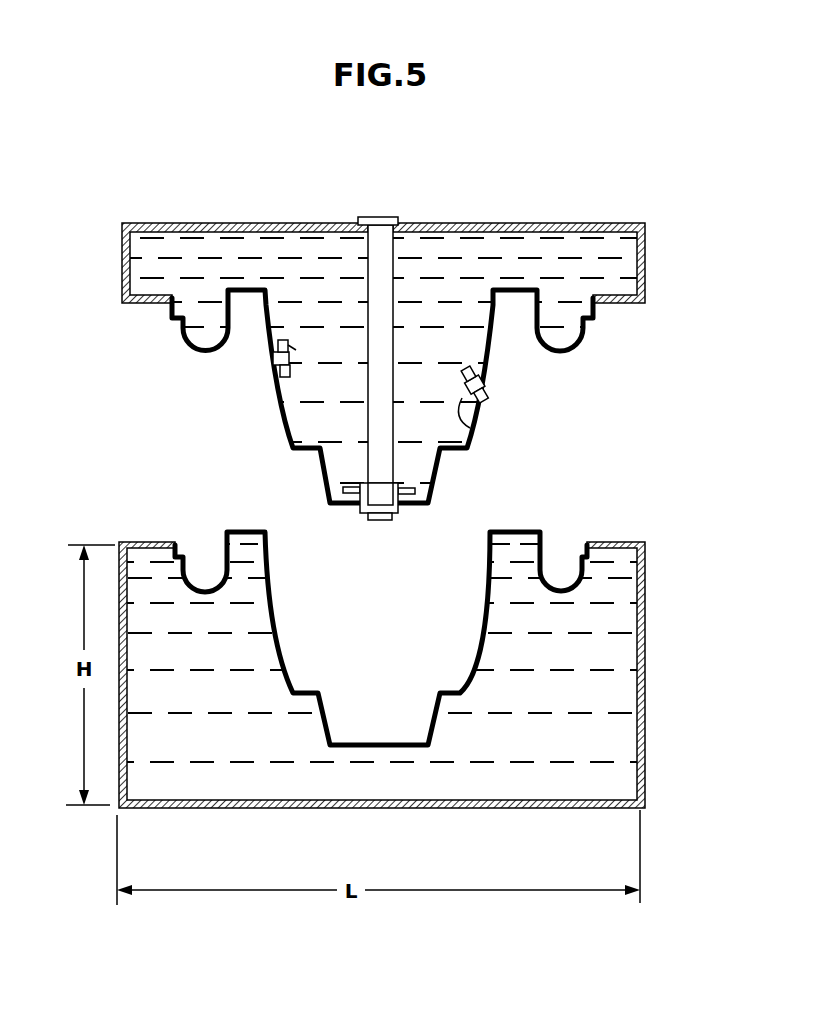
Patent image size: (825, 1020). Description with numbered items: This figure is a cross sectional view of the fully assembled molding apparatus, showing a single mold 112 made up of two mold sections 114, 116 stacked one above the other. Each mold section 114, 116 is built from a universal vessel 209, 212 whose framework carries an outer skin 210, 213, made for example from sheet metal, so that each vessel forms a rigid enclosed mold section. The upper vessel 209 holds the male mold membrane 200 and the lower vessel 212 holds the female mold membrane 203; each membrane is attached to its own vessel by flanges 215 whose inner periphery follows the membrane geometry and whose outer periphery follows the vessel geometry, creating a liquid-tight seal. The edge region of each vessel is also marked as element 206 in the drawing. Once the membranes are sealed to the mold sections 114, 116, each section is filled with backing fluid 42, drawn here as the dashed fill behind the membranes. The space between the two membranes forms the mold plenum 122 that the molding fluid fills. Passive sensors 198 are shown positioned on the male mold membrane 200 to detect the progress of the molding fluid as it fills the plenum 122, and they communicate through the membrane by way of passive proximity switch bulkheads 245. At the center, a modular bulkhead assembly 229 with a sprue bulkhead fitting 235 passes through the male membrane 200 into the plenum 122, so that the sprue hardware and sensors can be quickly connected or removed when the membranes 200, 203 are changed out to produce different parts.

The backing fluid 42 is at (190, 258).
The mold 112 is at (710, 442).
The mold section 114 is at (376, 519).
The mold section 116 is at (426, 646).
The mold plenum 122 is at (283, 510).
The passive sensors 198 is at (271, 369).
The male mold membrane 200 is at (281, 411).
The female mold membrane 203 is at (293, 673).
The flange 206 is at (152, 303).
The universal vessel 209 is at (540, 222).
The outer skin 210 is at (646, 293).
The universal vessel 212 is at (480, 808).
The outer skin 213 is at (412, 691).
The flanges 215 is at (610, 293).
The modular bulkhead assembly 229 is at (368, 218).
The sprue bulkhead fitting 235 is at (428, 493).
The passive proximity switch bulkheads 245 is at (298, 352).